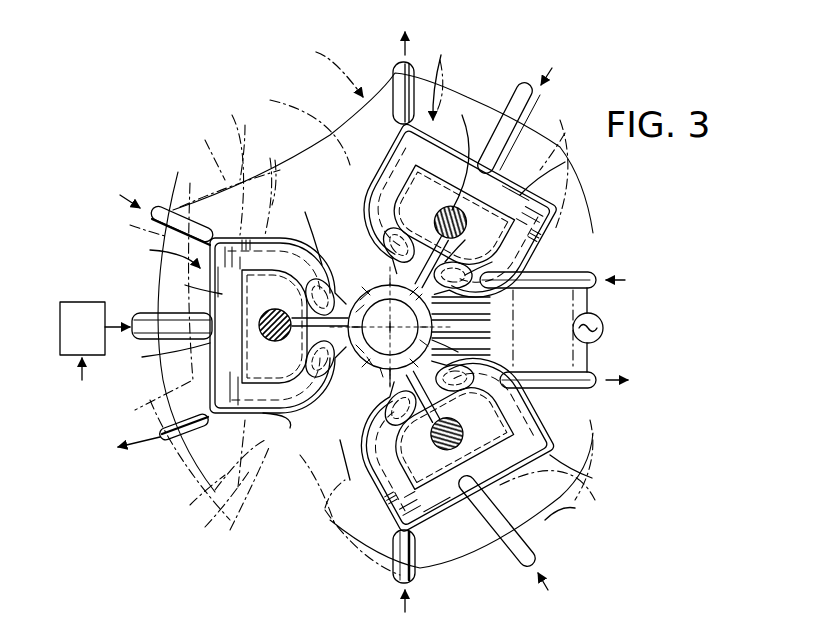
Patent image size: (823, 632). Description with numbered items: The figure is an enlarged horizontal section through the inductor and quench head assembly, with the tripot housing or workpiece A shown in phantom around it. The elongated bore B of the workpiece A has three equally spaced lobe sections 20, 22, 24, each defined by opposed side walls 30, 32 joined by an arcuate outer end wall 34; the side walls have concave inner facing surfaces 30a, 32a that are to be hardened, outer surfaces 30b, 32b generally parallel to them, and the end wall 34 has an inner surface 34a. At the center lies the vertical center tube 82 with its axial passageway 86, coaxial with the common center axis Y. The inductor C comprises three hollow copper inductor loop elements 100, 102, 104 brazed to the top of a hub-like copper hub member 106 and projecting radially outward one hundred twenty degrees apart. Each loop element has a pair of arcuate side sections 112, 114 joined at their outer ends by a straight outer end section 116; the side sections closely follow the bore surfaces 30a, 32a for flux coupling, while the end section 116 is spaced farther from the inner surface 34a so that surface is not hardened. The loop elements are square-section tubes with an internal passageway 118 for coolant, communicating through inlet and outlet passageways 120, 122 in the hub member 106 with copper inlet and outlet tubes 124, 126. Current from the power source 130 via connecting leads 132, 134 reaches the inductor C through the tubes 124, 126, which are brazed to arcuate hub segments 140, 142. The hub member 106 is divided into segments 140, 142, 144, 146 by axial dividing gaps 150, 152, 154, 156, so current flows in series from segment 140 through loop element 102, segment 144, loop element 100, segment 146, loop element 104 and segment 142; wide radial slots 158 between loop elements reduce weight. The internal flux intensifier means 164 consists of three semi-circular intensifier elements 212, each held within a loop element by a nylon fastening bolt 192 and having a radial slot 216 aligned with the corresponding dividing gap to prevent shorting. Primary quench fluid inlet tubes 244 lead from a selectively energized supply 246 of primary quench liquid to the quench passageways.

The lobe section 20 is at (134, 225).
The lobe section 22 is at (563, 143).
The lobe section 24 is at (573, 512).
The side wall 30 is at (193, 500).
The inner facing surface 30a is at (237, 464).
The outer surface 30b is at (210, 509).
The side wall 32 is at (205, 151).
The inner facing surface 32a is at (275, 171).
The outer surface 32b is at (245, 141).
The arcuate outer end wall 34 is at (115, 418).
The inner surface of end wall 34a is at (118, 445).
The center tube 82 is at (445, 352).
The axial passageway 86 is at (418, 288).
The inductor loop element 100 is at (230, 417).
The inductor loop element 102 is at (552, 205).
The inductor loop element 104 is at (565, 438).
The hub member 106 is at (283, 430).
The arcuate side section 112 is at (395, 165).
The arcuate side section 114 is at (268, 248).
The straight outer end section 116 is at (186, 284).
The passageway 118 is at (587, 474).
The inlet passageway 120 is at (494, 263).
The outlet passageway 122 is at (442, 215).
The inlet tube 124 is at (598, 268).
The outlet tube 126 is at (595, 390).
The power source 130 is at (605, 328).
The connecting lead 132 is at (590, 297).
The connecting lead 134 is at (590, 358).
The arcuate segment 140 is at (492, 300).
The arcuate segment 142 is at (492, 352).
The arcuate segment 144 is at (304, 228).
The arcuate segment 146 is at (347, 470).
The dividing gap 150 is at (492, 336).
The dividing gap 152 is at (470, 244).
The dividing gap 154 is at (318, 340).
The dividing gap 156 is at (463, 434).
The radial slot 158 is at (492, 317).
The internal flux intensifier means 164 is at (536, 110).
The nylon fastening bolt 192 is at (461, 154).
The intensifier element 212 is at (588, 162).
The slot 216 is at (274, 326).
The primary quench fluid inlet tube 244 is at (522, 92).
The supply of primary quench liquid 246 is at (82, 300).
The tripot housing A is at (330, 69).
The elongated bore B is at (327, 504).
The inductor C is at (440, 78).
The center axis Y is at (388, 381).